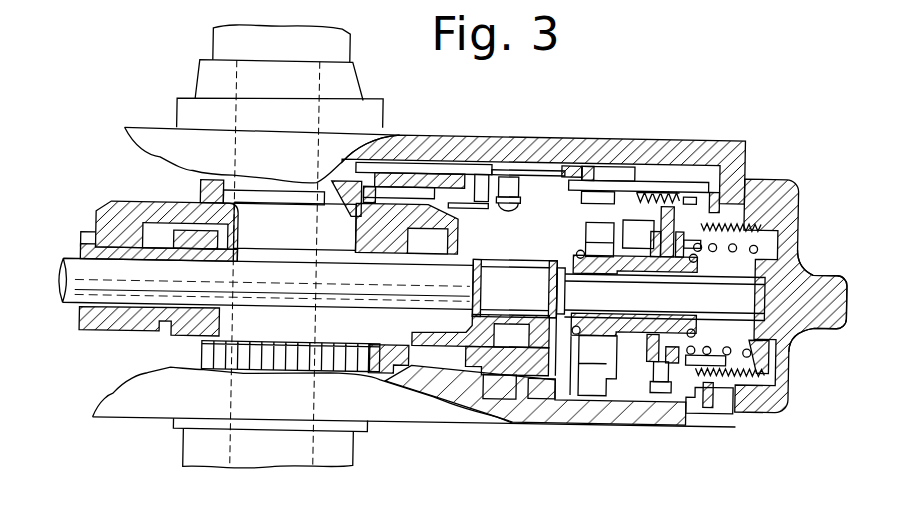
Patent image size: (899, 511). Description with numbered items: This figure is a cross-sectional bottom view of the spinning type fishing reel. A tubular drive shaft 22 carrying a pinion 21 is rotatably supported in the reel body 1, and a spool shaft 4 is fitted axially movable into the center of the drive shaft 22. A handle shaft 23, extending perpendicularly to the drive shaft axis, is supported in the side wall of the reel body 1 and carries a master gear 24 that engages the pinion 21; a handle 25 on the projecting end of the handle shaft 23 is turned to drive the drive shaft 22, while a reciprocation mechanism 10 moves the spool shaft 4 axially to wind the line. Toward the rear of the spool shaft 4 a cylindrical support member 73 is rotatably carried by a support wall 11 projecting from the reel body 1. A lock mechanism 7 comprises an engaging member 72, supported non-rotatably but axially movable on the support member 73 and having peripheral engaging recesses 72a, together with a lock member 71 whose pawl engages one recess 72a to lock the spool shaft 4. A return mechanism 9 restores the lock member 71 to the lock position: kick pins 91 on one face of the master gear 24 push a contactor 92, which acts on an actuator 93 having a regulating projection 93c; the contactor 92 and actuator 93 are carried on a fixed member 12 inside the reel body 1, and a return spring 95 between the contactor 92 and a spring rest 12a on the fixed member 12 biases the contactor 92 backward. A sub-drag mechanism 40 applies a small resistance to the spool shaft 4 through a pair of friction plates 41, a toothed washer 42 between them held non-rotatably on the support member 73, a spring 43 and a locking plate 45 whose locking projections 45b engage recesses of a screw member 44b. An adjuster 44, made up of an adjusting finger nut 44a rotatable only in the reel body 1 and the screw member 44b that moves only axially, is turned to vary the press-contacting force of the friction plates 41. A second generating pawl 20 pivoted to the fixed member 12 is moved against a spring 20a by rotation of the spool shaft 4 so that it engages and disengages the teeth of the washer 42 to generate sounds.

The reel body 1 is at (567, 138).
The spool shaft 4 is at (398, 298).
The lock mechanism 7 is at (575, 373).
The return mechanism 9 is at (480, 178).
The reciprocation mechanism 10 is at (452, 378).
The support wall 11 is at (622, 382).
The fixed member 12 is at (392, 163).
The spring rest 12a is at (513, 210).
The second generating pawl 20 is at (657, 190).
The spring 20a is at (676, 192).
The pinion 21 is at (86, 236).
The drive shaft 22 is at (80, 253).
The handle shaft 23 is at (228, 330).
The master gear 24 is at (141, 202).
The handle 25 is at (218, 40).
The sub-drag mechanism 40 is at (690, 395).
The friction plates 41 is at (655, 365).
The washer 42 is at (660, 395).
The spring 43 is at (768, 375).
The adjuster 44 is at (818, 276).
The adjusting finger nut 44a is at (810, 318).
The screw member 44b is at (740, 368).
The locking plate 45 is at (713, 192).
The locking projections 45b is at (733, 223).
The lock member 71 is at (591, 393).
The engaging member 72 is at (580, 372).
The engaging recesses 72a is at (597, 223).
The support member 73 is at (535, 372).
The kick pin 91 is at (343, 175).
The contactor 92 is at (385, 193).
The actuator 93 is at (420, 175).
The regulating projection 93c is at (473, 210).
The return spring 95 is at (505, 193).